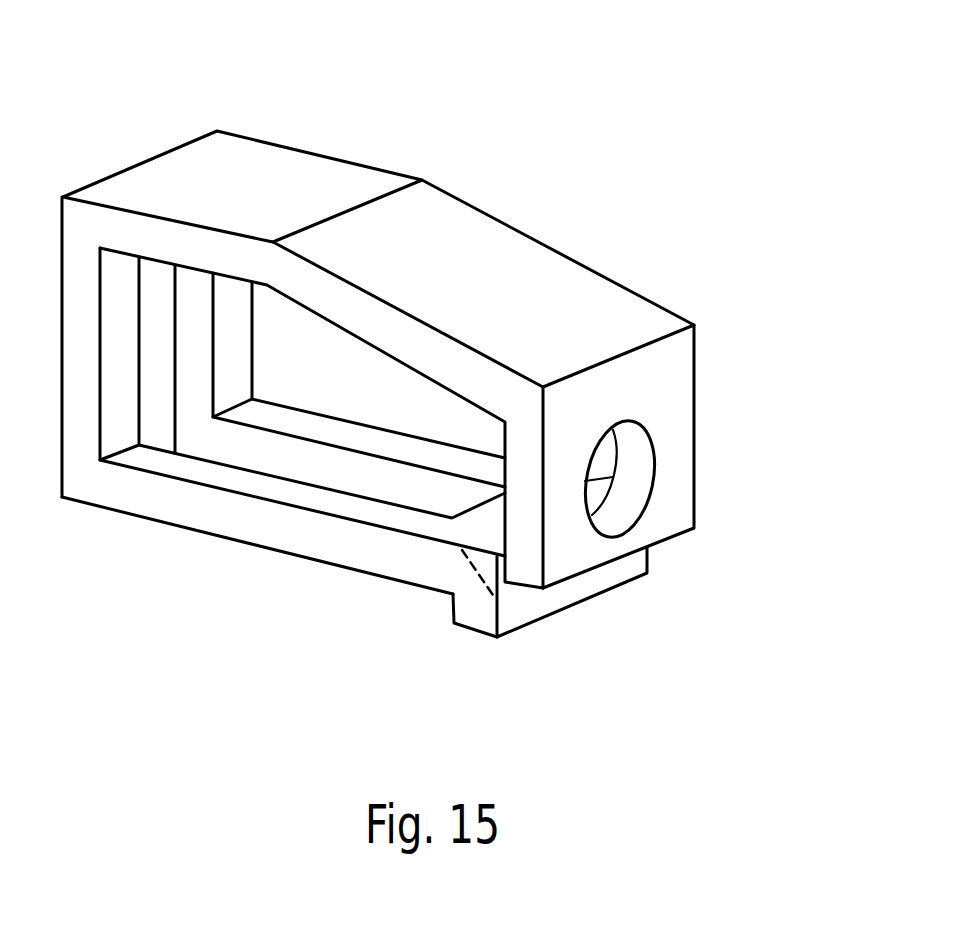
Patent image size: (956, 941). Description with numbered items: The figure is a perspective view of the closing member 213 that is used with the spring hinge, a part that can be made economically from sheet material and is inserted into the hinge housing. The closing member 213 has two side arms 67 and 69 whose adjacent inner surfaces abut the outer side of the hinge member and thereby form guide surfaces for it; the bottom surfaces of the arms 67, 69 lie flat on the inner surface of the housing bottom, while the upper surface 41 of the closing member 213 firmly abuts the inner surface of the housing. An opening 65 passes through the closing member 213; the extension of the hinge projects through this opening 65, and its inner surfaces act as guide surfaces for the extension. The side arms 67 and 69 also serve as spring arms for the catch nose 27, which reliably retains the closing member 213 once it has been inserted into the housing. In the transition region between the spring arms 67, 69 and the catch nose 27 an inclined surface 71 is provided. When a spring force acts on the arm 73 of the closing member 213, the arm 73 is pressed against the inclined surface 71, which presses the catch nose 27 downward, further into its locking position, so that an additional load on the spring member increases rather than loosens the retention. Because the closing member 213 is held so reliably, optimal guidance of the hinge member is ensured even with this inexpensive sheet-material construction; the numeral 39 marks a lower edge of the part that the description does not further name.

The closing member 213 is at (127, 149).
The upper surface 41 is at (240, 193).
The arm 73 is at (670, 512).
The opening 65 is at (638, 450).
The arm 69 is at (362, 440).
The arm 67 is at (140, 503).
The bottom edge 39 is at (240, 543).
The catch nose 27 is at (472, 613).
The inclined surface 71 is at (488, 578).